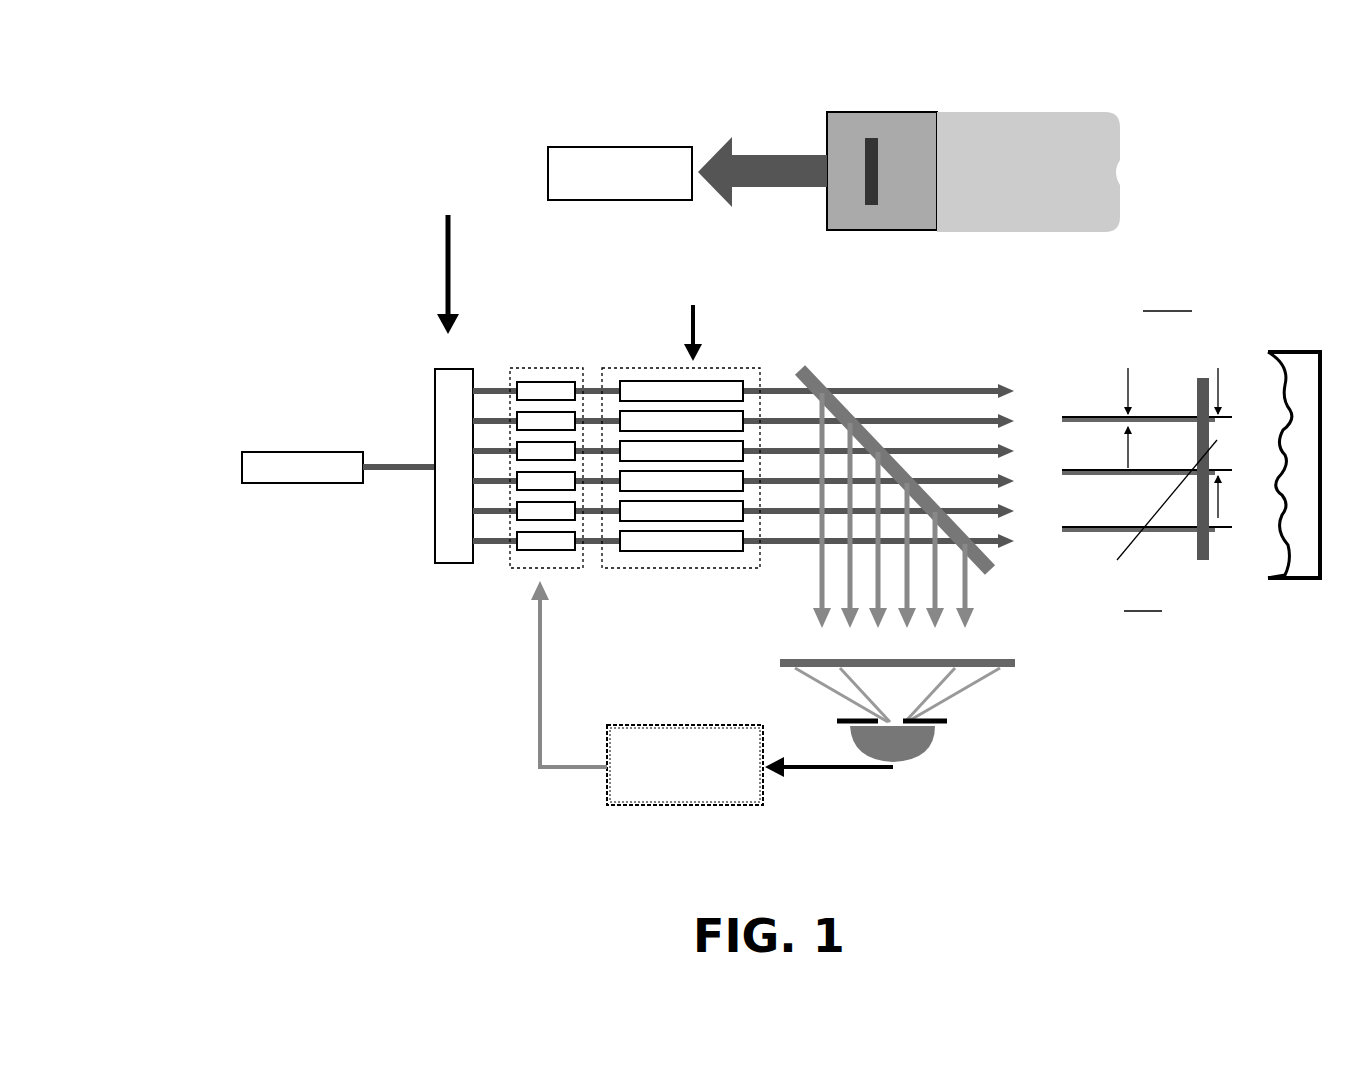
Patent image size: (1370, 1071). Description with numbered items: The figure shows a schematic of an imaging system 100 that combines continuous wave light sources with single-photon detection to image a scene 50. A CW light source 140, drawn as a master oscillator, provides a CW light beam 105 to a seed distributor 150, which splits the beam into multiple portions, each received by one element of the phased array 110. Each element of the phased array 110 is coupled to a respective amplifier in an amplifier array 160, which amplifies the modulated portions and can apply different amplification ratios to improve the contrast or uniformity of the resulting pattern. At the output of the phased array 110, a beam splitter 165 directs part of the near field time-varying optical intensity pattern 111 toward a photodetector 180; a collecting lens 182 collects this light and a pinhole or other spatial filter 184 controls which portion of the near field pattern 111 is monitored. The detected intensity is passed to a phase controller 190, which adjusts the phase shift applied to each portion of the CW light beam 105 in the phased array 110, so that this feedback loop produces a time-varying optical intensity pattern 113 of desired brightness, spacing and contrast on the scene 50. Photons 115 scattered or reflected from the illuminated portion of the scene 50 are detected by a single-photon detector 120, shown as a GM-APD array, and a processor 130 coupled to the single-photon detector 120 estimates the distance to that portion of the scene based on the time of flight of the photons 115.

The imaging system 100 is at (308, 80).
The continuous wave light beam 105 is at (378, 488).
The phased array 110 is at (533, 567).
The near field time-varying optical intensity pattern 111 is at (784, 568).
The time-varying optical intensity pattern 113 is at (1090, 376).
The photons 115 is at (1132, 158).
The single-photon detector 120 is at (825, 130).
The processor 130 is at (620, 146).
The continuous wave light source 140 is at (315, 485).
The seed distributor 150 is at (430, 413).
The amplifier array 160 is at (668, 567).
The beam splitter 165 is at (850, 415).
The photodetector 180 is at (914, 770).
The collecting lens 182 is at (975, 665).
The spatial filter 184 is at (940, 726).
The phase controller 190 is at (670, 808).
The scene 50 is at (1253, 380).